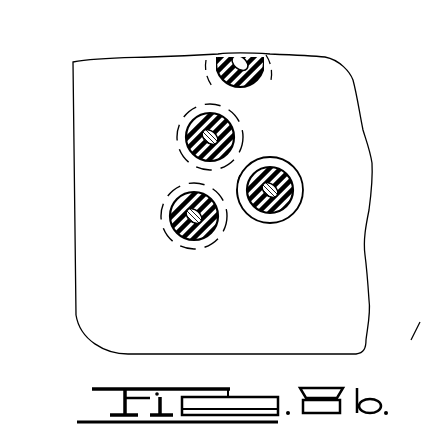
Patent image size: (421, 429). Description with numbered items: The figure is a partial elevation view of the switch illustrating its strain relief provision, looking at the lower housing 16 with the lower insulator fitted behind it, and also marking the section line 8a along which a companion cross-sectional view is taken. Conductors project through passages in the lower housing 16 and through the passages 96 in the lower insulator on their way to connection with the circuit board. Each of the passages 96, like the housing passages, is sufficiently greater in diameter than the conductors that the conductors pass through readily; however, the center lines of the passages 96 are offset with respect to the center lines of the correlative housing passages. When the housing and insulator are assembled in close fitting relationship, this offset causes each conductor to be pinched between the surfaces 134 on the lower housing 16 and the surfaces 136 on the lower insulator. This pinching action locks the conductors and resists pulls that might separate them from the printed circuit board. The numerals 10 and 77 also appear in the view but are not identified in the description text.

The lower housing 16 is at (154, 324).
The fastener assembly 10 is at (304, 167).
The passages in the lower insulator 96 is at (253, 162).
The surfaces on lower housing 134 is at (256, 213).
The sleeve 77 is at (280, 213).
The surfaces on lower insulator 136 is at (284, 212).
The section line 8a- 8a is at (170, 222).